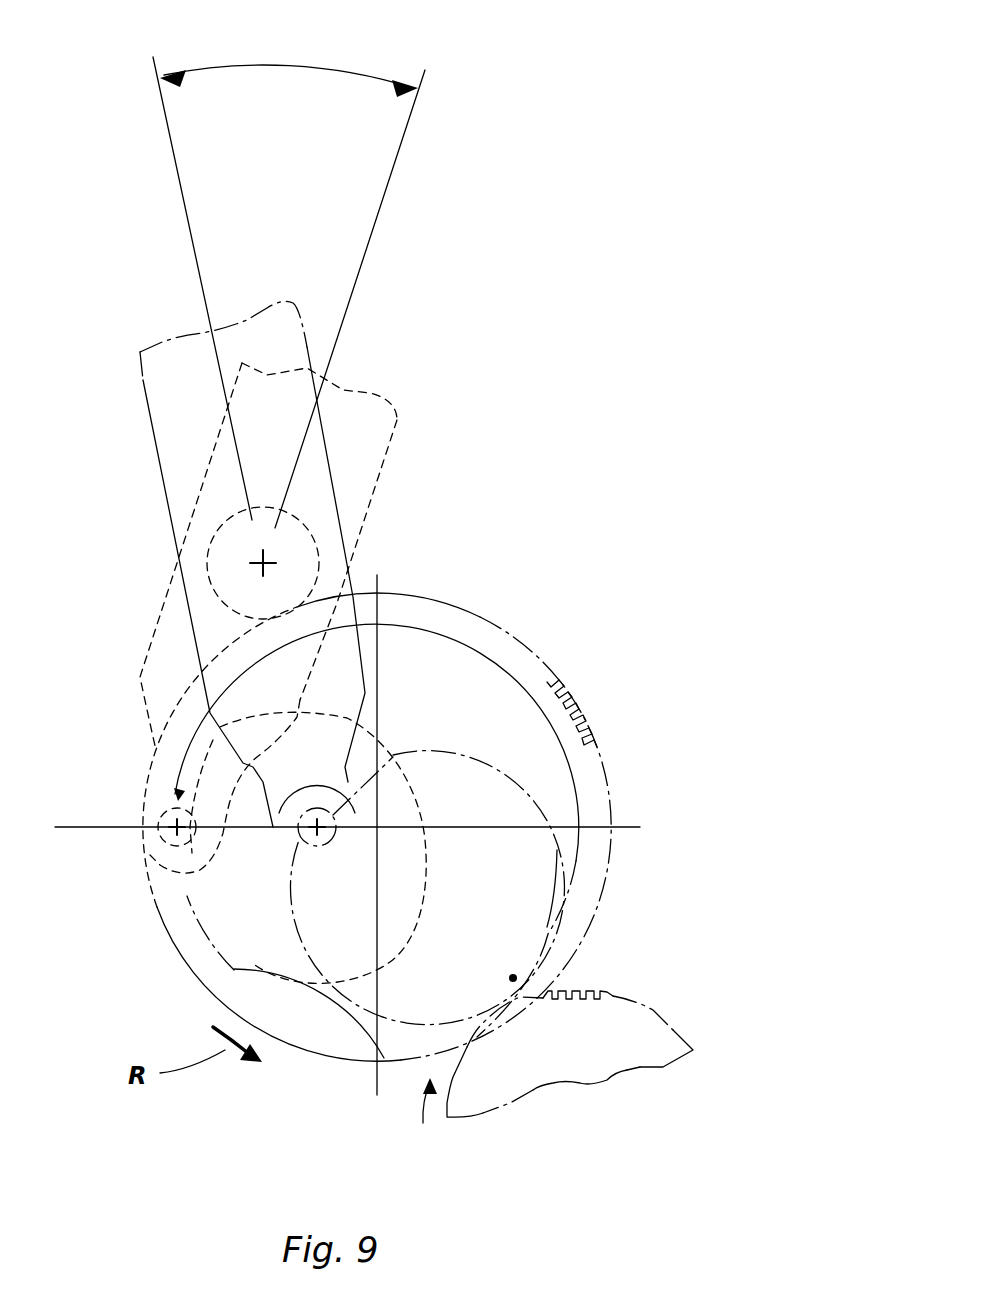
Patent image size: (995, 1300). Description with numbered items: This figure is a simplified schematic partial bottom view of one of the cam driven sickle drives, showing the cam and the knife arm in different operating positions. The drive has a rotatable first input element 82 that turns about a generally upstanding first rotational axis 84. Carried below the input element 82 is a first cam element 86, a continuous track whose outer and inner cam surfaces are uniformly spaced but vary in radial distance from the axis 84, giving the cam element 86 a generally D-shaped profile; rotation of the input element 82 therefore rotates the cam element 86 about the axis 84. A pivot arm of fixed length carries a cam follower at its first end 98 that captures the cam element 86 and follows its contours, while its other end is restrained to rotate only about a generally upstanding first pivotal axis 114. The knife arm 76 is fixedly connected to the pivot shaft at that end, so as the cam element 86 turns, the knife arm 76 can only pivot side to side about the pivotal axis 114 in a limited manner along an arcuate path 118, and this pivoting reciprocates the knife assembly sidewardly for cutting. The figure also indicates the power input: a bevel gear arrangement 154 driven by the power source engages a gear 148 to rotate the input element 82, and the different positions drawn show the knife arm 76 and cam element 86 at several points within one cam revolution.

The arcuate path 118 is at (265, 67).
The knife arm 76 is at (145, 405).
The first pivotal axis 114 is at (270, 558).
The gear 148 is at (573, 707).
The first end 98 is at (297, 857).
The first rotational axis 84 is at (395, 833).
The first cam element 86 is at (553, 898).
The first input element 82 is at (290, 1045).
The bevel gear arrangement 154 is at (670, 1023).